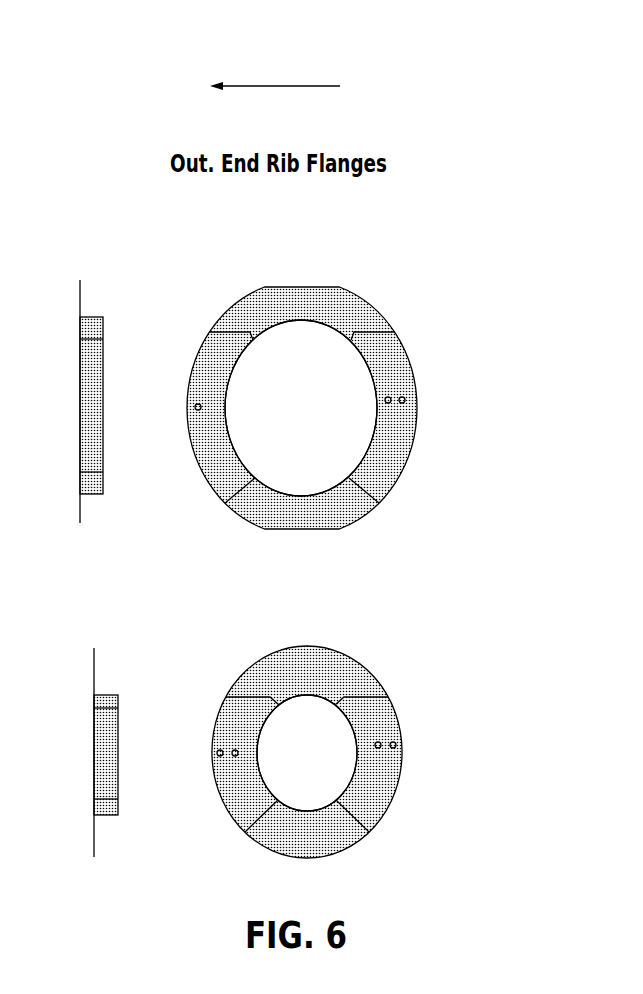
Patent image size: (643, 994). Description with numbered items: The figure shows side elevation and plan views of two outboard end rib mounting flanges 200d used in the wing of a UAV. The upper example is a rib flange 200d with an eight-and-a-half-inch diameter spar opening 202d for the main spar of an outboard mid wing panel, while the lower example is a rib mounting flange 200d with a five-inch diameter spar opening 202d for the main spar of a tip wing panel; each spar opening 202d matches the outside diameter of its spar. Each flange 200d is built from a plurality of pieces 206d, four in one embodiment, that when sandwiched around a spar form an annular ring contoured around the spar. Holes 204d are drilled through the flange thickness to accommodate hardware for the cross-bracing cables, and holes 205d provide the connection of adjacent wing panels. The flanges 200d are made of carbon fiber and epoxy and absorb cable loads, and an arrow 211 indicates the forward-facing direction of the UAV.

The rib mounting flange 200d is at (509, 75).
The arrow 211 is at (288, 85).
The spar opening 202d is at (350, 423).
The holes 204d is at (410, 400).
The holes 205d is at (203, 405).
The pieces 206d is at (313, 287).